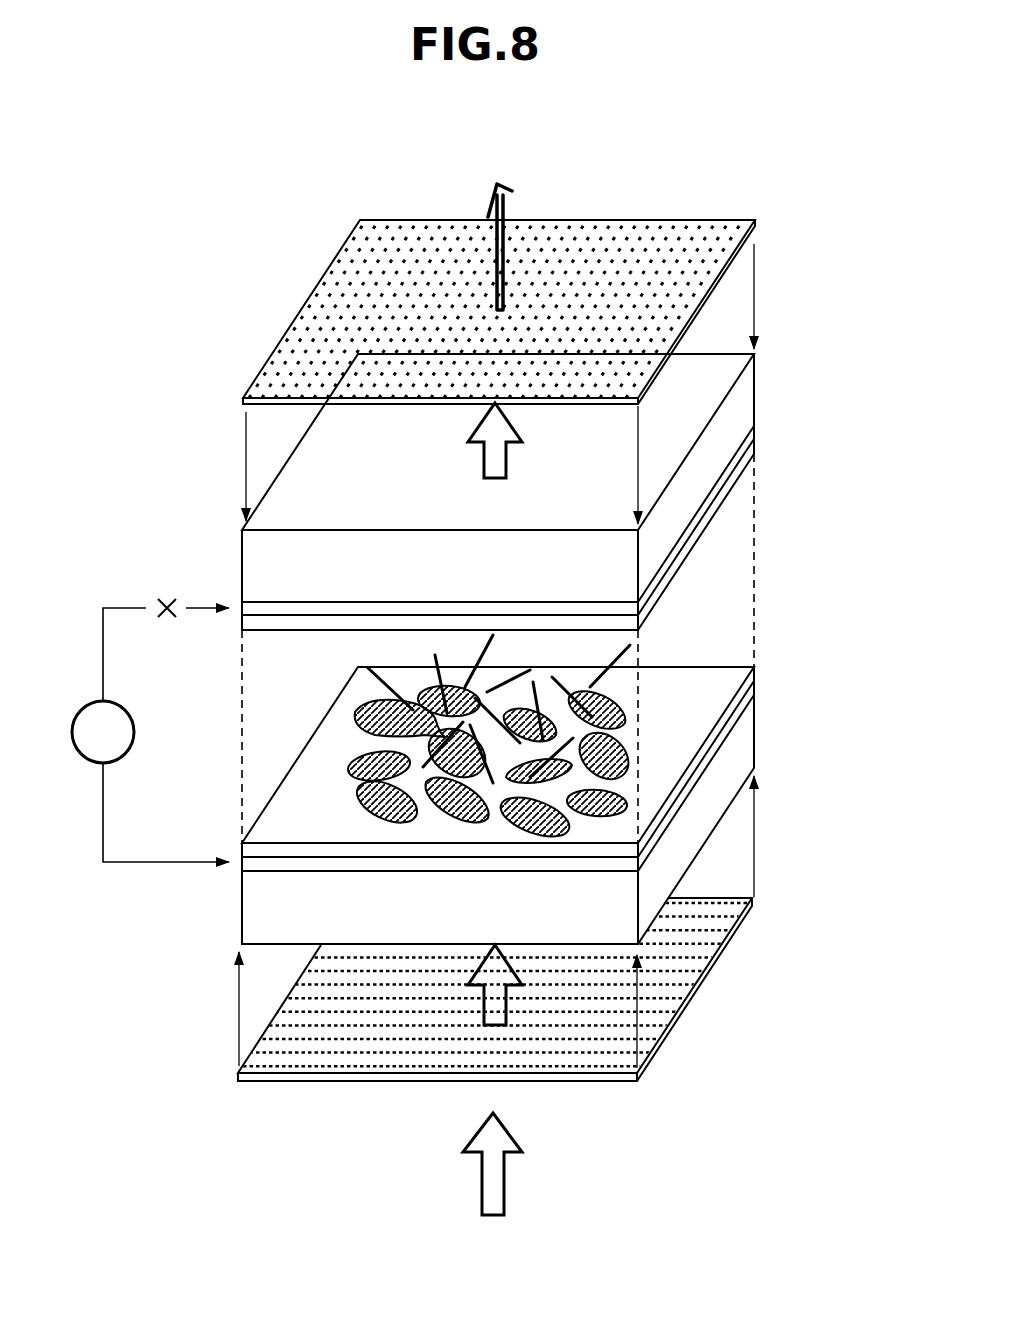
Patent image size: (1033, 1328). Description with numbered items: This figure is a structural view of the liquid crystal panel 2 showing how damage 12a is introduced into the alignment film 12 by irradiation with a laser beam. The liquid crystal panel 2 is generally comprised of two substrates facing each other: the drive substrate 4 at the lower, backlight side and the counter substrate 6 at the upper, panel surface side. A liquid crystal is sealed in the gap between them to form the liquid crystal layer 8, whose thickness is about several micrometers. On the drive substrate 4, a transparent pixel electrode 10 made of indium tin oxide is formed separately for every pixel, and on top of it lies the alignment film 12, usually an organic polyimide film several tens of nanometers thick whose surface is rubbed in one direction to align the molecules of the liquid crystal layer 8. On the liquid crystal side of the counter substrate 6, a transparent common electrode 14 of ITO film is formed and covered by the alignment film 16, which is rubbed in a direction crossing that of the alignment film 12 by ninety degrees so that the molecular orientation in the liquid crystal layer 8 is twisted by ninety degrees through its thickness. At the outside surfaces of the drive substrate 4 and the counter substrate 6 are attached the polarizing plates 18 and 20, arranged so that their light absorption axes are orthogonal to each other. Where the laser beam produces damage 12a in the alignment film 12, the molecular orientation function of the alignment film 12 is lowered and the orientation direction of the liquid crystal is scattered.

The liquid crystal panel 2 is at (797, 141).
The polarizing plate 20 is at (637, 221).
The counter substrate 6 is at (745, 400).
The transparent common electrode 14 is at (242, 603).
The alignment film 16 is at (242, 627).
The liquid crystal layer 8 is at (730, 595).
The drive substrate 4 is at (735, 747).
The alignment film 12 is at (242, 846).
The damage 12a is at (354, 762).
The pixel electrode 10 is at (242, 866).
The polarizing plate 18 is at (710, 975).